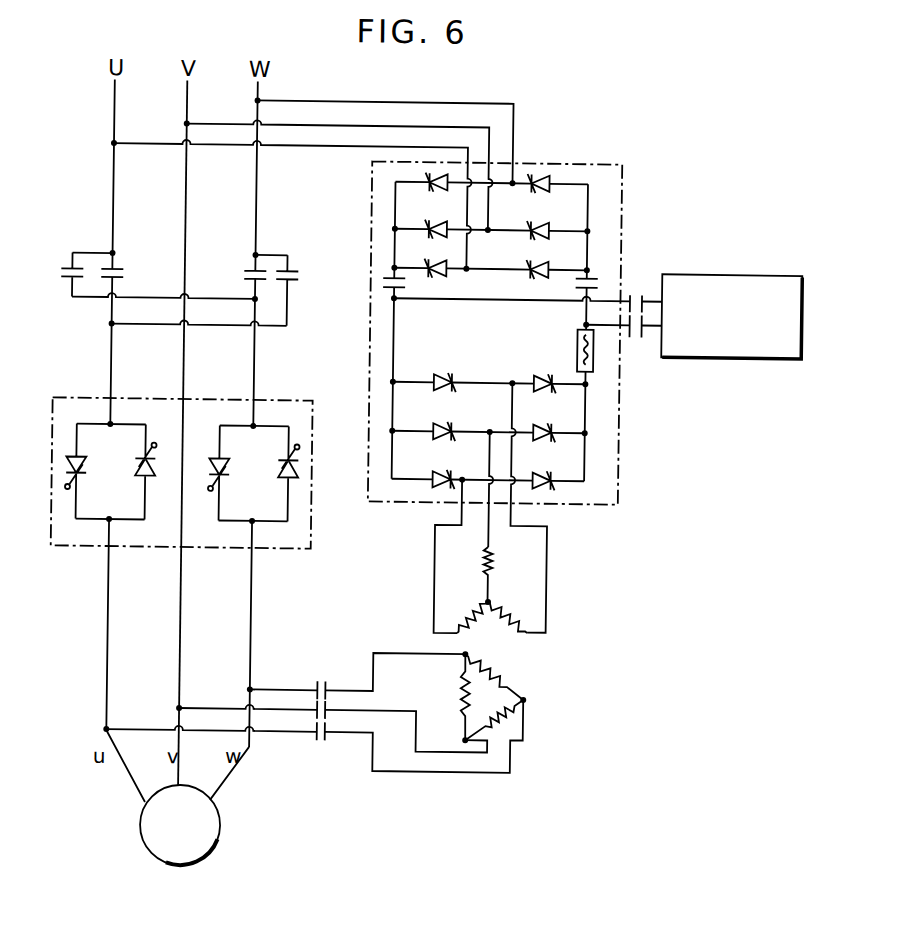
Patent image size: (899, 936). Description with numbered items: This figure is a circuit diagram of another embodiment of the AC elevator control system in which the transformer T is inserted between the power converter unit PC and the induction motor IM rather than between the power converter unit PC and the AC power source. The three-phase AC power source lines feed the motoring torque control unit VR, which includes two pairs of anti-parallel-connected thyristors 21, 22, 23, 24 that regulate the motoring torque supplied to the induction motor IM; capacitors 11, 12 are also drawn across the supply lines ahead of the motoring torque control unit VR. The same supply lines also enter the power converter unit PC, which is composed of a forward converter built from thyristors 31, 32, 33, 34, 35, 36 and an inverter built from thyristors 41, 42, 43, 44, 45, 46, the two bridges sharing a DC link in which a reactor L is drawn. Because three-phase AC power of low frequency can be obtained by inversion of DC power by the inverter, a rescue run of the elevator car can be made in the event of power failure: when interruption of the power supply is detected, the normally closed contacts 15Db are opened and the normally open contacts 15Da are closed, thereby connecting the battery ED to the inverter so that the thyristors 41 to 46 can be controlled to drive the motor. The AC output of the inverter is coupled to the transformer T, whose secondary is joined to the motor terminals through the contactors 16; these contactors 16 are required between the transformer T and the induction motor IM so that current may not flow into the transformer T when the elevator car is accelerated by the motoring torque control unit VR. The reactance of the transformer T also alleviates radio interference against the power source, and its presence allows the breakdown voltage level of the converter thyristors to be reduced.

The capacitor 11 is at (119, 278).
The capacitor 12 is at (60, 272).
The contact of emergency switch-over contactor 15Da is at (638, 291).
The contact of emergency switch-over contactor 15Db is at (407, 282).
The contactors 16 is at (321, 681).
The thyristor 21 is at (99, 467).
The thyristor 22 is at (137, 475).
The thyristor 23 is at (240, 468).
The thyristor 24 is at (280, 475).
The thyristor 31 is at (437, 192).
The thyristor 32 is at (542, 193).
The thyristor 33 is at (436, 241).
The thyristor 34 is at (538, 222).
The thyristor 35 is at (447, 281).
The thyristor 36 is at (538, 263).
The thyristor 41 is at (437, 376).
The thyristor 42 is at (543, 376).
The thyristor 43 is at (437, 425).
The thyristor 44 is at (538, 422).
The thyristor 45 is at (437, 473).
The thyristor 46 is at (538, 470).
The reactor L is at (575, 346).
The transformer T is at (546, 676).
The induction motor IM is at (225, 829).
The power converter unit PC is at (591, 161).
The motoring torque control unit VR is at (91, 402).
The battery ED is at (728, 271).